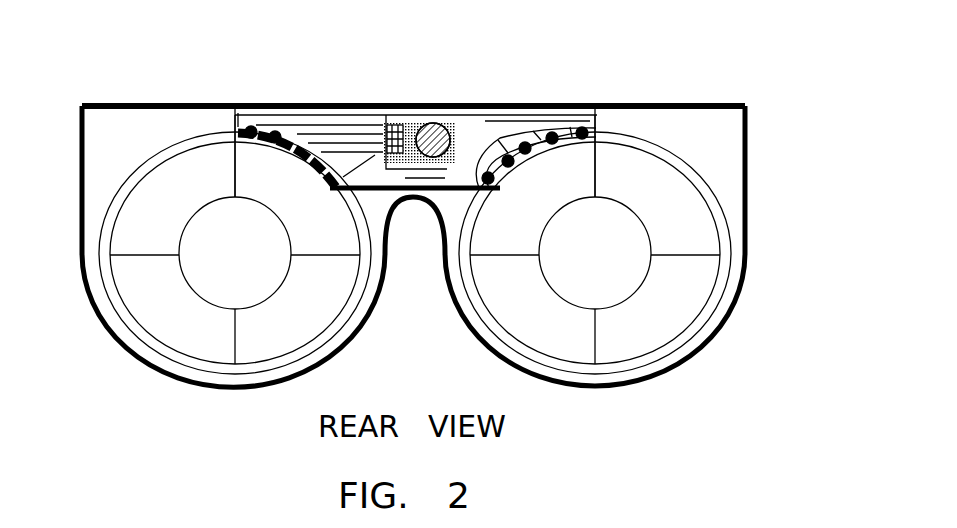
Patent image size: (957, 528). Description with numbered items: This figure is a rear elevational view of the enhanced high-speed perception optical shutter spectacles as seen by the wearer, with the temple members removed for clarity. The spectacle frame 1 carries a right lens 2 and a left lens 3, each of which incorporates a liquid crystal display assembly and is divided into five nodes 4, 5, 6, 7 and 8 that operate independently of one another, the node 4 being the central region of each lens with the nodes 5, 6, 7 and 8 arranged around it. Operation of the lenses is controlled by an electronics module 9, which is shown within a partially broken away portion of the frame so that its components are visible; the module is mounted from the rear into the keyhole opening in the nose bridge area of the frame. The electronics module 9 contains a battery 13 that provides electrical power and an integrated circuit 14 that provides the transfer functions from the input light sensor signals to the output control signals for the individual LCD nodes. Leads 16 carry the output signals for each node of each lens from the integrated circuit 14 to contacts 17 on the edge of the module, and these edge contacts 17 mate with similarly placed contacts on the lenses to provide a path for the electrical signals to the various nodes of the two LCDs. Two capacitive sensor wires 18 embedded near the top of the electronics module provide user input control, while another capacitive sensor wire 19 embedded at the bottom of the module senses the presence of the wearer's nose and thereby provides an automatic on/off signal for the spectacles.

The spectacle frame 1 is at (728, 103).
The right lens 2 is at (683, 330).
The left lens 3 is at (143, 327).
The node 4 is at (260, 260).
The node 5 is at (371, 175).
The node 6 is at (324, 288).
The node 7 is at (450, 325).
The node 8 is at (505, 227).
The electronics module 9 is at (528, 100).
The battery 13 is at (432, 128).
The integrated circuit 14 is at (388, 122).
The leads 16 is at (378, 228).
The contacts 17 is at (278, 148).
The capacitive sensor wires 18 is at (300, 108).
The capacitive sensor wire 19 is at (427, 195).